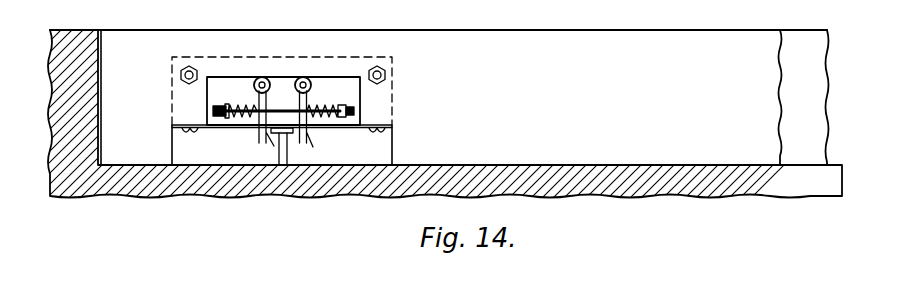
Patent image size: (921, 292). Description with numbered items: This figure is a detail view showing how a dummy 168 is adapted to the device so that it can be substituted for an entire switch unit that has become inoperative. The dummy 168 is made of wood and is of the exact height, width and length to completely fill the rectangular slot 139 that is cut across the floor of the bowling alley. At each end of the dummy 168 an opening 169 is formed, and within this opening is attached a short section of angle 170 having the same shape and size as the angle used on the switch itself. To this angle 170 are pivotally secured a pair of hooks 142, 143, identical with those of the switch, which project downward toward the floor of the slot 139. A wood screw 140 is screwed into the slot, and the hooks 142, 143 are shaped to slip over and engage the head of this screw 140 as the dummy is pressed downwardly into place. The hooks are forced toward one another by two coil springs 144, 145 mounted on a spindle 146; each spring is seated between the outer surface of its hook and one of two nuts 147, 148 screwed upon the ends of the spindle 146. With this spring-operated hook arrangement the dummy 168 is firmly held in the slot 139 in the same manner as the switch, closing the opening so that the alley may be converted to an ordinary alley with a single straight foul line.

The slot 139 is at (805, 98).
The dummy 168 is at (649, 50).
The short section of angle 170 is at (363, 122).
The opening 169 is at (375, 148).
The nut 147 is at (207, 115).
The spindle 146 is at (214, 110).
The coil spring 144 is at (238, 104).
The coil spring 145 is at (326, 102).
The nut 148 is at (344, 104).
The hook 142 is at (264, 140).
The hook 143 is at (303, 143).
The wood screw 140 is at (291, 170).